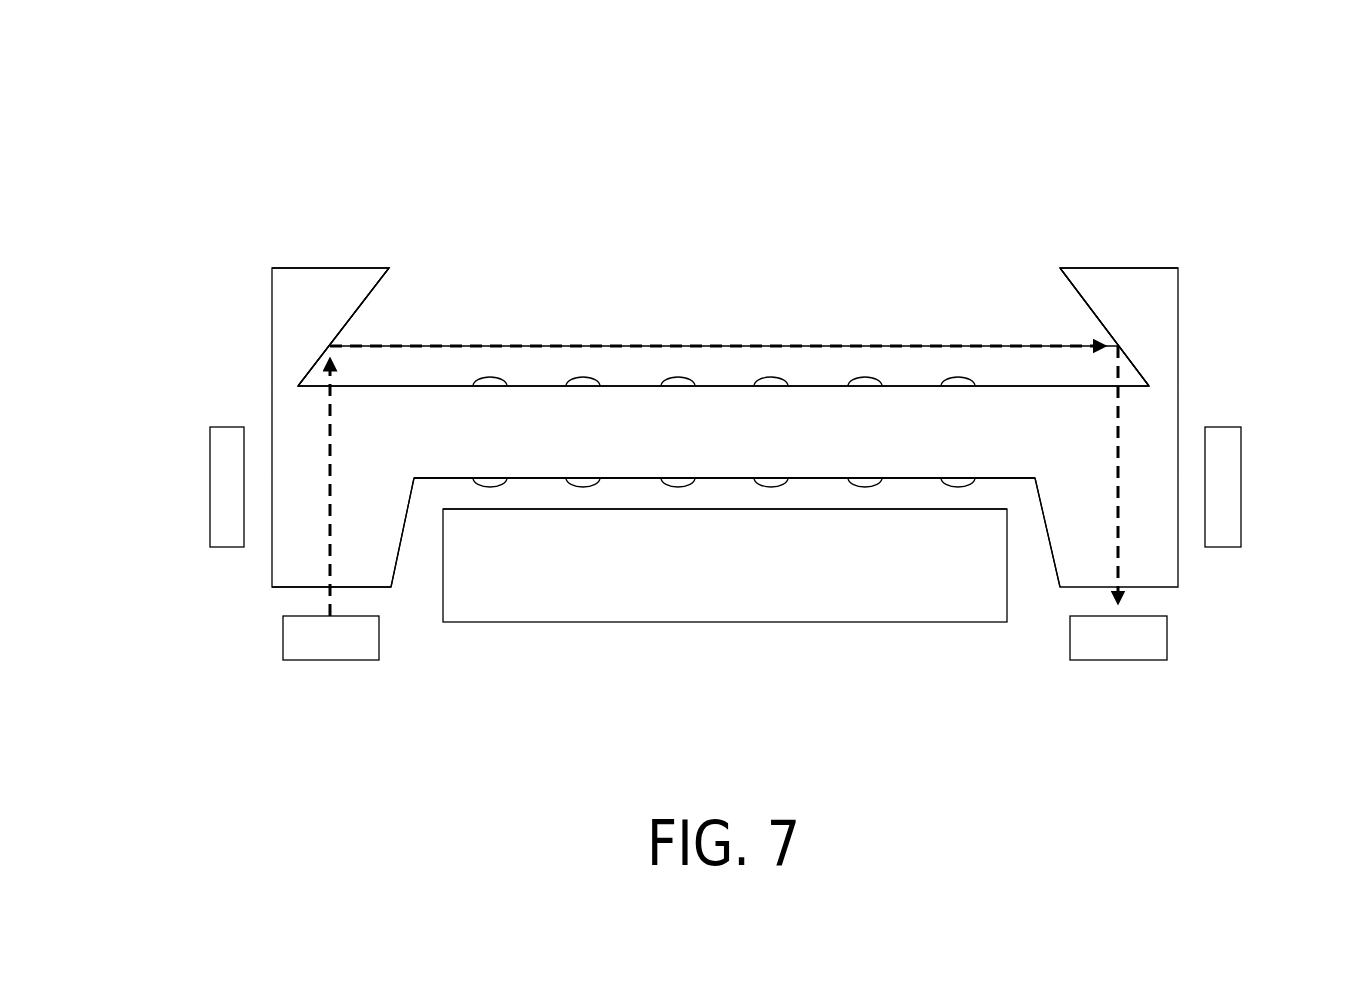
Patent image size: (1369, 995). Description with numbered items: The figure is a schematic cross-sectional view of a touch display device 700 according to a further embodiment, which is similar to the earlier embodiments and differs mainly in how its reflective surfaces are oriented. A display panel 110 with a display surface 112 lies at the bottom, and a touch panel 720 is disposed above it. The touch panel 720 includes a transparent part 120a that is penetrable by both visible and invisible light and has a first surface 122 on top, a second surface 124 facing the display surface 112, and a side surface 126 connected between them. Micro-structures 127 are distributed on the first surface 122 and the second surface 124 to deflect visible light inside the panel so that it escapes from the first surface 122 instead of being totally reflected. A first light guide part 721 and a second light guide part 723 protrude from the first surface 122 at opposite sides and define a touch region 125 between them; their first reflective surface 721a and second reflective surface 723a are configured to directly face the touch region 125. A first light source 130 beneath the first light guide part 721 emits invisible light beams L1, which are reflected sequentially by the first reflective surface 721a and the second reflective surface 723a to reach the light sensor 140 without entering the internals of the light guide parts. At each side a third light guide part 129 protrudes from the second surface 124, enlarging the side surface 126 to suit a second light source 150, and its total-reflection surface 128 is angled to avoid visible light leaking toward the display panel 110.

The touch display device 700 is at (1360, 706).
The touch panel 720 is at (337, 195).
The first light guide part 721 is at (303, 280).
The first reflective surface 721a is at (378, 290).
The second light guide part 723 is at (1122, 280).
The second reflective surface 723a is at (1072, 290).
The touch region 125 is at (718, 253).
The invisible light beams L1 is at (762, 338).
The first surface 122 is at (543, 382).
The transparent part 120a is at (860, 400).
The micro-structures 127 is at (957, 378).
The second surface 124 is at (828, 484).
The display surface 112 is at (630, 506).
The display panel 110 is at (592, 624).
The side surface 126 is at (268, 404).
The total-reflection surface 128 is at (398, 543).
The third light guide part 129 is at (280, 578).
The second light source 150 is at (210, 485).
The first light source 130 is at (282, 638).
The light sensor 140 is at (1168, 638).